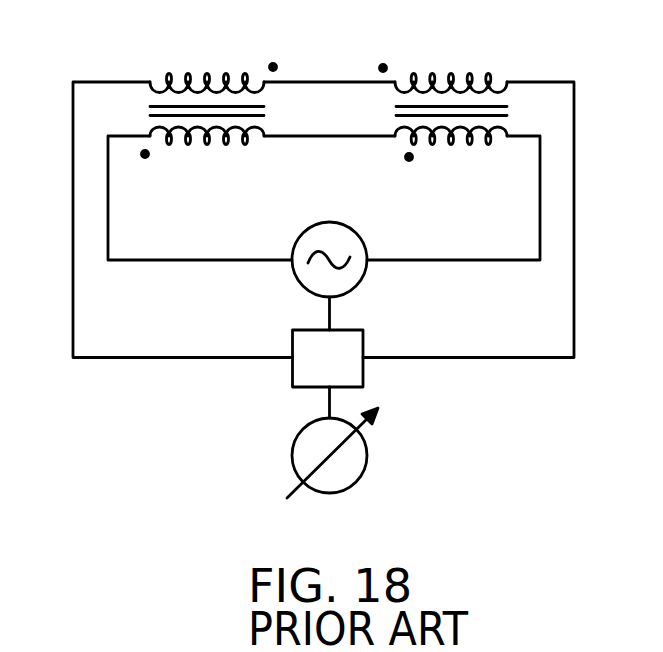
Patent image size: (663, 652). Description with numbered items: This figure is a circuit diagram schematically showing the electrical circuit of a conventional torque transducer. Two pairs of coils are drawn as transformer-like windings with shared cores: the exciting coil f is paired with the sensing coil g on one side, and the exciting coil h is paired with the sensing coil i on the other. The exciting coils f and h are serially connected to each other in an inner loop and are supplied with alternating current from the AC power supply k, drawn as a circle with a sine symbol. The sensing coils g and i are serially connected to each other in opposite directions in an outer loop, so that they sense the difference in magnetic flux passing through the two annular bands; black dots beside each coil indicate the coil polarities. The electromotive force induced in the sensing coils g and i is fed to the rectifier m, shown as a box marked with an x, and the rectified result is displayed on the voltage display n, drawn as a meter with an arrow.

The sensing coil g is at (205, 80).
The exciting coil f is at (220, 145).
The sensing coil i is at (450, 80).
The exciting coil h is at (472, 145).
The AC power supply k is at (364, 277).
The rectifier m is at (362, 372).
The voltage display n is at (366, 463).